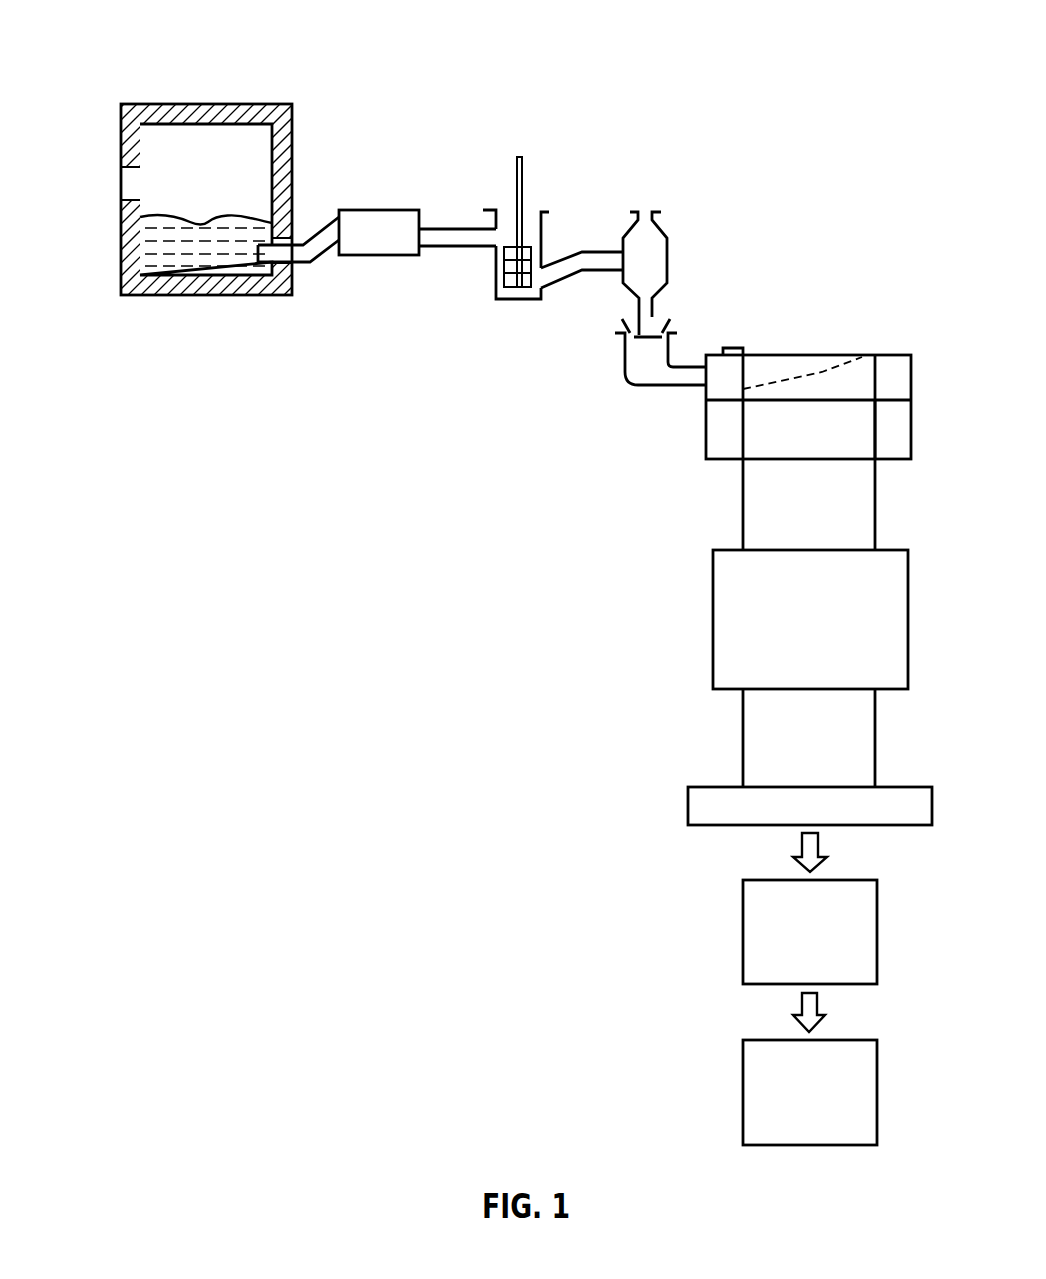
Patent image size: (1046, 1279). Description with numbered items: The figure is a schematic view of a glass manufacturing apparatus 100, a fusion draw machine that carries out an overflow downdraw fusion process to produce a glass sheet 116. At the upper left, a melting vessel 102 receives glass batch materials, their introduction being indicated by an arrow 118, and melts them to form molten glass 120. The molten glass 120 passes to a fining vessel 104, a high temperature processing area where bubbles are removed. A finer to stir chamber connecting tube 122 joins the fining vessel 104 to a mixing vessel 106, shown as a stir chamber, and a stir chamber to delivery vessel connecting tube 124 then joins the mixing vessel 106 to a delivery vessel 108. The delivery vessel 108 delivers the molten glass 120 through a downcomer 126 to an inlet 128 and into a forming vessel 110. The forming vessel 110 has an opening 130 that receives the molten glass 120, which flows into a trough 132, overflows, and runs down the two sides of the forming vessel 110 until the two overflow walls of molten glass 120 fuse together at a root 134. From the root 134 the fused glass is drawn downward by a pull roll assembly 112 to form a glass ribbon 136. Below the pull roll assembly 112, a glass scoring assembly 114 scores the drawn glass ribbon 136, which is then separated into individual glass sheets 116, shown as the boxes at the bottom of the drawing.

The glass manufacturing apparatus 100 is at (152, 36).
The melting vessel 102 is at (190, 103).
The fining vessel 104 is at (378, 210).
The mixing vessel 106 is at (541, 230).
The delivery vessel 108 is at (667, 262).
The forming vessel 110 is at (911, 380).
The pull roll assembly 112 is at (713, 620).
The glass scoring assembly 114 is at (688, 806).
The glass sheet 116 is at (743, 933).
The arrow 118 is at (148, 185).
The molten glass 120 is at (207, 222).
The finer to stir chamber connecting tube 122 is at (457, 247).
The stir chamber to delivery vessel connecting tube 124 is at (602, 273).
The downcomer 126 is at (653, 315).
The inlet 128 is at (625, 380).
The opening 130 is at (700, 387).
The trough 132 is at (823, 370).
The root 134 is at (852, 459).
The glass ribbon 136 is at (743, 510).